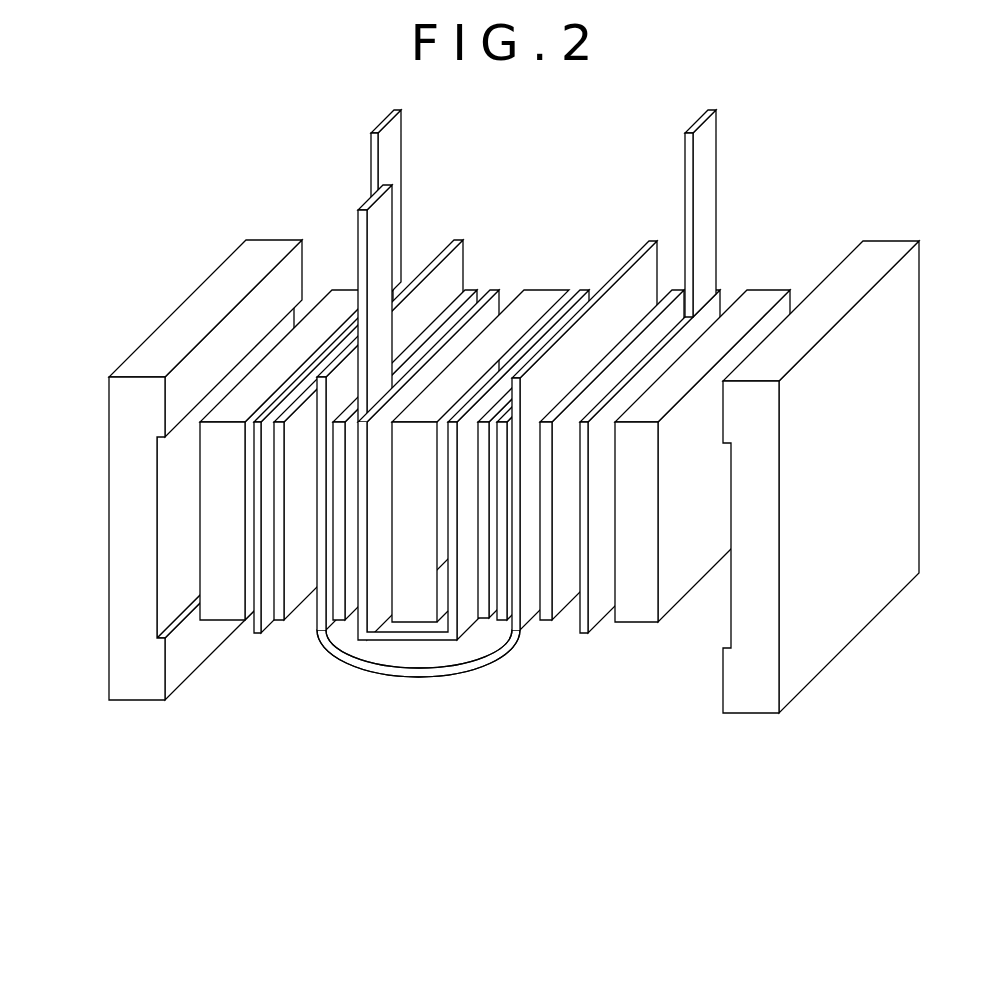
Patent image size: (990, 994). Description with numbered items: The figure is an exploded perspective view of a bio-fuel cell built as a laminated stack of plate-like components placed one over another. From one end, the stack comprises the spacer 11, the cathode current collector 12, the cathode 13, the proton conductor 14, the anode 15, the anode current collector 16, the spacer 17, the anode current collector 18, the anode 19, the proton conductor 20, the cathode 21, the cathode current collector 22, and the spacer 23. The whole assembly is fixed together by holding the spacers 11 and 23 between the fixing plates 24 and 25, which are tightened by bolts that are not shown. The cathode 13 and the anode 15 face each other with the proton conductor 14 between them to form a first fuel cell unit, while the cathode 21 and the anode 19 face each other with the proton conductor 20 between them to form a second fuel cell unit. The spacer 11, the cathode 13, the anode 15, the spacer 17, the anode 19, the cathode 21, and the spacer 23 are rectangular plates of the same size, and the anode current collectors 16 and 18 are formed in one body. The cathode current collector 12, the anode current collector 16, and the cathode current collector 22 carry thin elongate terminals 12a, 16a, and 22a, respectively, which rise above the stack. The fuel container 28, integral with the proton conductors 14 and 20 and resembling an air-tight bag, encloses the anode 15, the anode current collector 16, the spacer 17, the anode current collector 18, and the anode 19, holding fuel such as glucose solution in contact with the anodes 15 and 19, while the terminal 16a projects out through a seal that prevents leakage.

The spacer 11 is at (220, 604).
The cathode current collector 12 is at (258, 626).
The terminal 12a is at (393, 163).
The cathode 13 is at (279, 624).
The proton conductor 14 is at (318, 480).
The anode 15 is at (340, 613).
The anode current collector 16 is at (378, 606).
The terminal 16a is at (376, 228).
The spacer 17 is at (415, 608).
The anode current collector 18 is at (467, 606).
The anode 19 is at (490, 606).
The proton conductor 20 is at (530, 563).
The cathode 21 is at (547, 612).
The cathode current collector 22 is at (598, 608).
The terminal 22a is at (709, 162).
The spacer 23 is at (638, 608).
The fixing plate 24 is at (133, 543).
The fixing plate 25 is at (888, 446).
The fuel container 28 is at (454, 681).